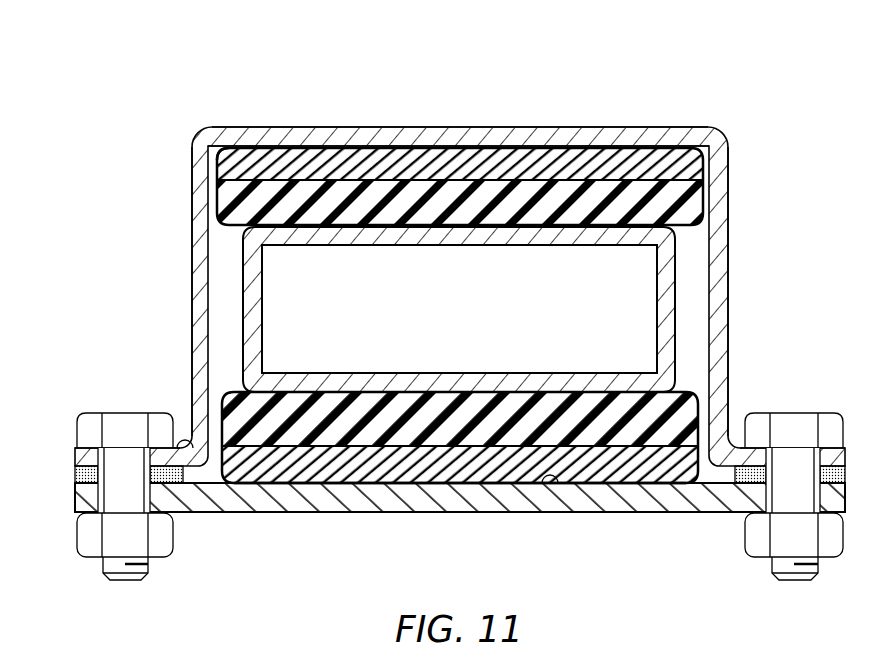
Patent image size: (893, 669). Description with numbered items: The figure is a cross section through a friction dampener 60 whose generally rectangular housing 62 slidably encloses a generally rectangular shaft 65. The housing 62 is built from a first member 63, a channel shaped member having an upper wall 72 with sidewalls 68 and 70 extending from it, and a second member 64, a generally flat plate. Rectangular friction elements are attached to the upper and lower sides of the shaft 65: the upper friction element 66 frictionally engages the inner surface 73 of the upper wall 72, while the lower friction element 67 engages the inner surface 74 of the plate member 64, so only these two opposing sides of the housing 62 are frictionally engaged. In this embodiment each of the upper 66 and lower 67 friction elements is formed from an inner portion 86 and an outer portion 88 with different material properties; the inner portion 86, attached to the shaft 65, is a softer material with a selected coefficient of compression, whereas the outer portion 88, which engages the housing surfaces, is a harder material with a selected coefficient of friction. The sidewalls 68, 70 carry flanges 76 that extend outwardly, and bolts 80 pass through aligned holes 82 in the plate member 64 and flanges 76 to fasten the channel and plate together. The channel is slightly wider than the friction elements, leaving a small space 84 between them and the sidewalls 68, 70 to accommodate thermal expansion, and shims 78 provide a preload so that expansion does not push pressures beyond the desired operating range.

The friction dampener 60 is at (459, 322).
The rectangular housing 62 is at (460, 310).
The first member 63 is at (558, 127).
The second member 64 is at (615, 512).
The rectangular shaft 65 is at (243, 272).
The upper friction element 66 is at (703, 198).
The lower friction element 67 is at (221, 418).
The sidewall 68 is at (712, 245).
The sidewall 70 is at (200, 312).
The upper wall 72 is at (635, 127).
The inner surface of the upper wall 73 is at (240, 165).
The inner surface of the plate member 74 is at (552, 474).
The flanges 76 is at (186, 452).
The shims 78 is at (76, 475).
The bolts 80 is at (120, 445).
The aligned holes 82 is at (96, 488).
The space 84 is at (216, 178).
The inner portion 86 is at (462, 195).
The outer portion 88 is at (378, 165).